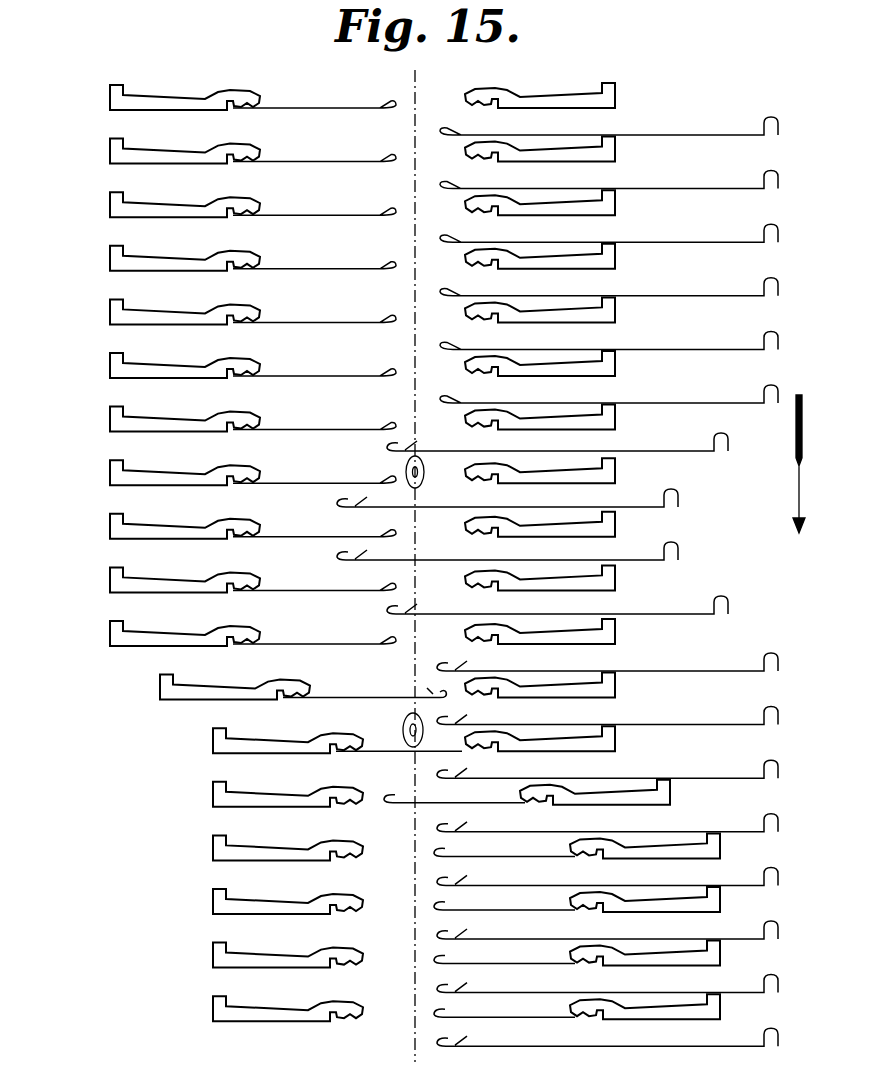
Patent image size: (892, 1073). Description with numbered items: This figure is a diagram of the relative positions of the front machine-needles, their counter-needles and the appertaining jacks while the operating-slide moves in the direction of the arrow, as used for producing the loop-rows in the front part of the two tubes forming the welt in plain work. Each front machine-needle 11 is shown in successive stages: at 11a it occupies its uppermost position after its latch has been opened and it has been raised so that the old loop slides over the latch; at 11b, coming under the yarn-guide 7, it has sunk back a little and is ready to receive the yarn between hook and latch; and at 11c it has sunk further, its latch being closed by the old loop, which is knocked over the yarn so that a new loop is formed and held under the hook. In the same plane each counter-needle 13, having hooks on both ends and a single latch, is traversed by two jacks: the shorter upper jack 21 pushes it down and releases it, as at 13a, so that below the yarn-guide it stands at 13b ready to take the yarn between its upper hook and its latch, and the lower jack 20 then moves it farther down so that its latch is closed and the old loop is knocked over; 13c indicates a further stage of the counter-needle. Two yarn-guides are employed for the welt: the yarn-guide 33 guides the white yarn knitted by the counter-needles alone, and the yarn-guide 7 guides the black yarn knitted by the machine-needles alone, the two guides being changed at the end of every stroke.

The lower jack 20 is at (110, 102).
The upper jack 21 is at (730, 904).
The front machine-needle 11 is at (582, 581).
The machine-needle in uppermost position 11a is at (507, 527).
The machine-needle sunk back under yarn-guide 11b is at (557, 439).
The machine-needle in lowered position 11c is at (609, 391).
The counter-needle 13 is at (404, 559).
The counter-needle pushed down 13a is at (454, 798).
The counter-needle below yarn-guide 13b is at (364, 688).
The counter-needle 13c is at (314, 634).
The yarn-guide 7 is at (405, 478).
The yarn-guide 33 is at (403, 740).